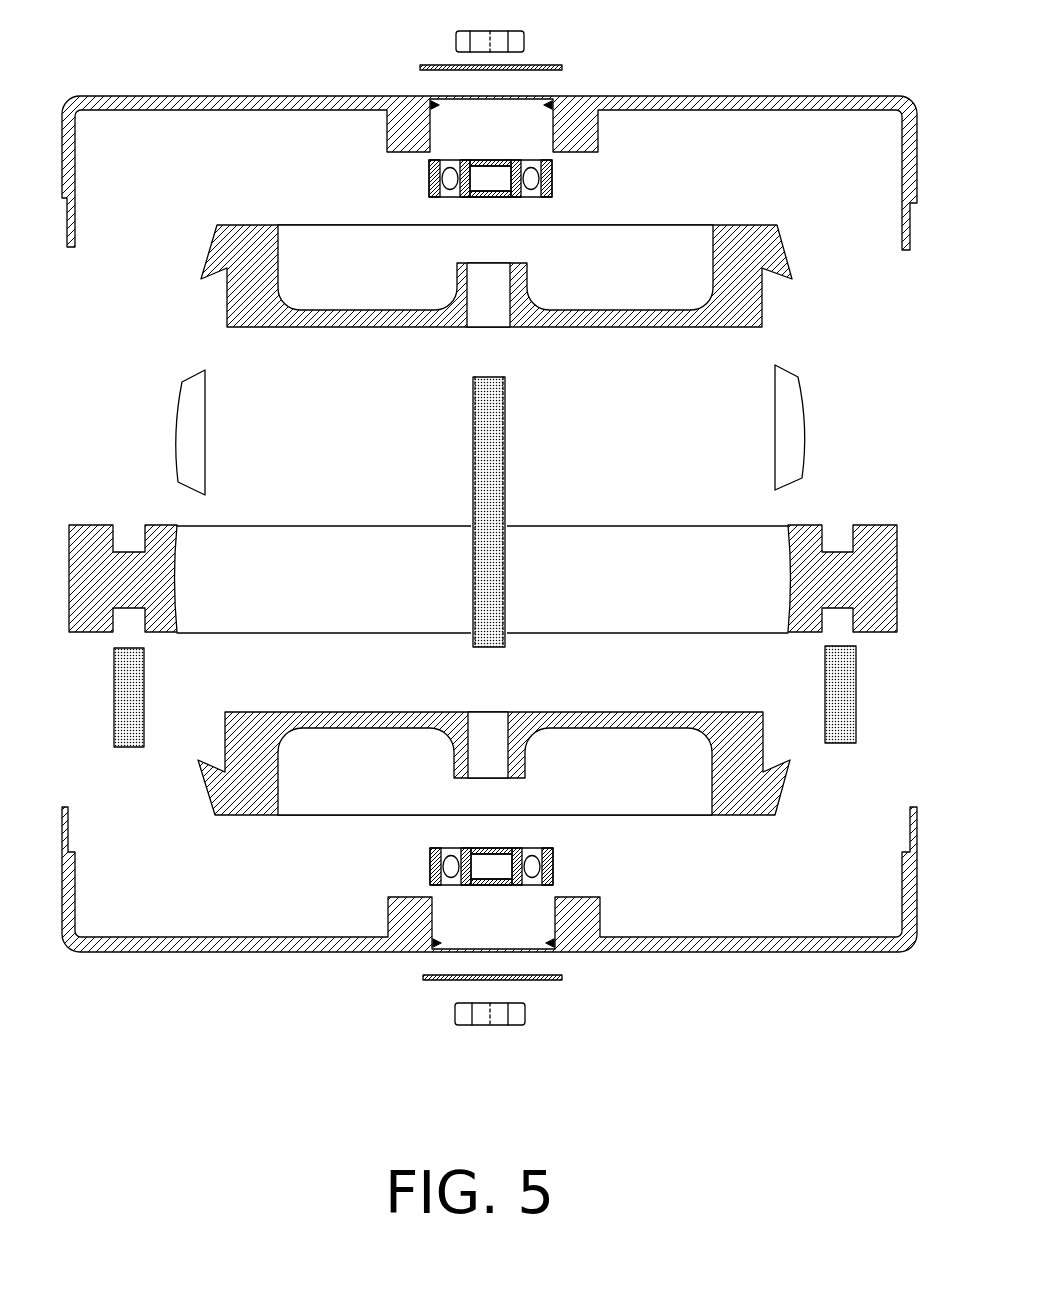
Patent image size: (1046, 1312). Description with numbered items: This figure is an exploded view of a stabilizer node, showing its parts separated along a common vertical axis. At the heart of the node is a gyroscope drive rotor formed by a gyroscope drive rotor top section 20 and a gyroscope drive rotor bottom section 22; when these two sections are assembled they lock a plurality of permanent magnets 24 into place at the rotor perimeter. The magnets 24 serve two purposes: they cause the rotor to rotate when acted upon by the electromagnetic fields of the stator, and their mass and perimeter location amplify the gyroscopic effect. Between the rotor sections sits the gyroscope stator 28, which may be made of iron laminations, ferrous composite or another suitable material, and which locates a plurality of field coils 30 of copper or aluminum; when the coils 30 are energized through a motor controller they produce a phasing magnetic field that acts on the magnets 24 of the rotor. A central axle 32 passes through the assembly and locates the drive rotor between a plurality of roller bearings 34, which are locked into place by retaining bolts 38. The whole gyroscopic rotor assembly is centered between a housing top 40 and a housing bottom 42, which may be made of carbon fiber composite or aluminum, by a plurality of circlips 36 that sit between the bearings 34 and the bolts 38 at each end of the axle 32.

The gyroscope drive rotor top section 20 is at (232, 245).
The gyroscope drive rotor bottom section 22 is at (253, 723).
The permanent magnets 24 is at (190, 438).
The gyroscope stator 28 is at (873, 532).
The field coils 30 is at (127, 683).
The central axle 32 is at (488, 485).
The roller bearings 34 is at (550, 180).
The circlips 36 is at (562, 67).
The retaining bolts 38 is at (480, 43).
The housing top 40 is at (217, 102).
The housing bottom 42 is at (190, 943).